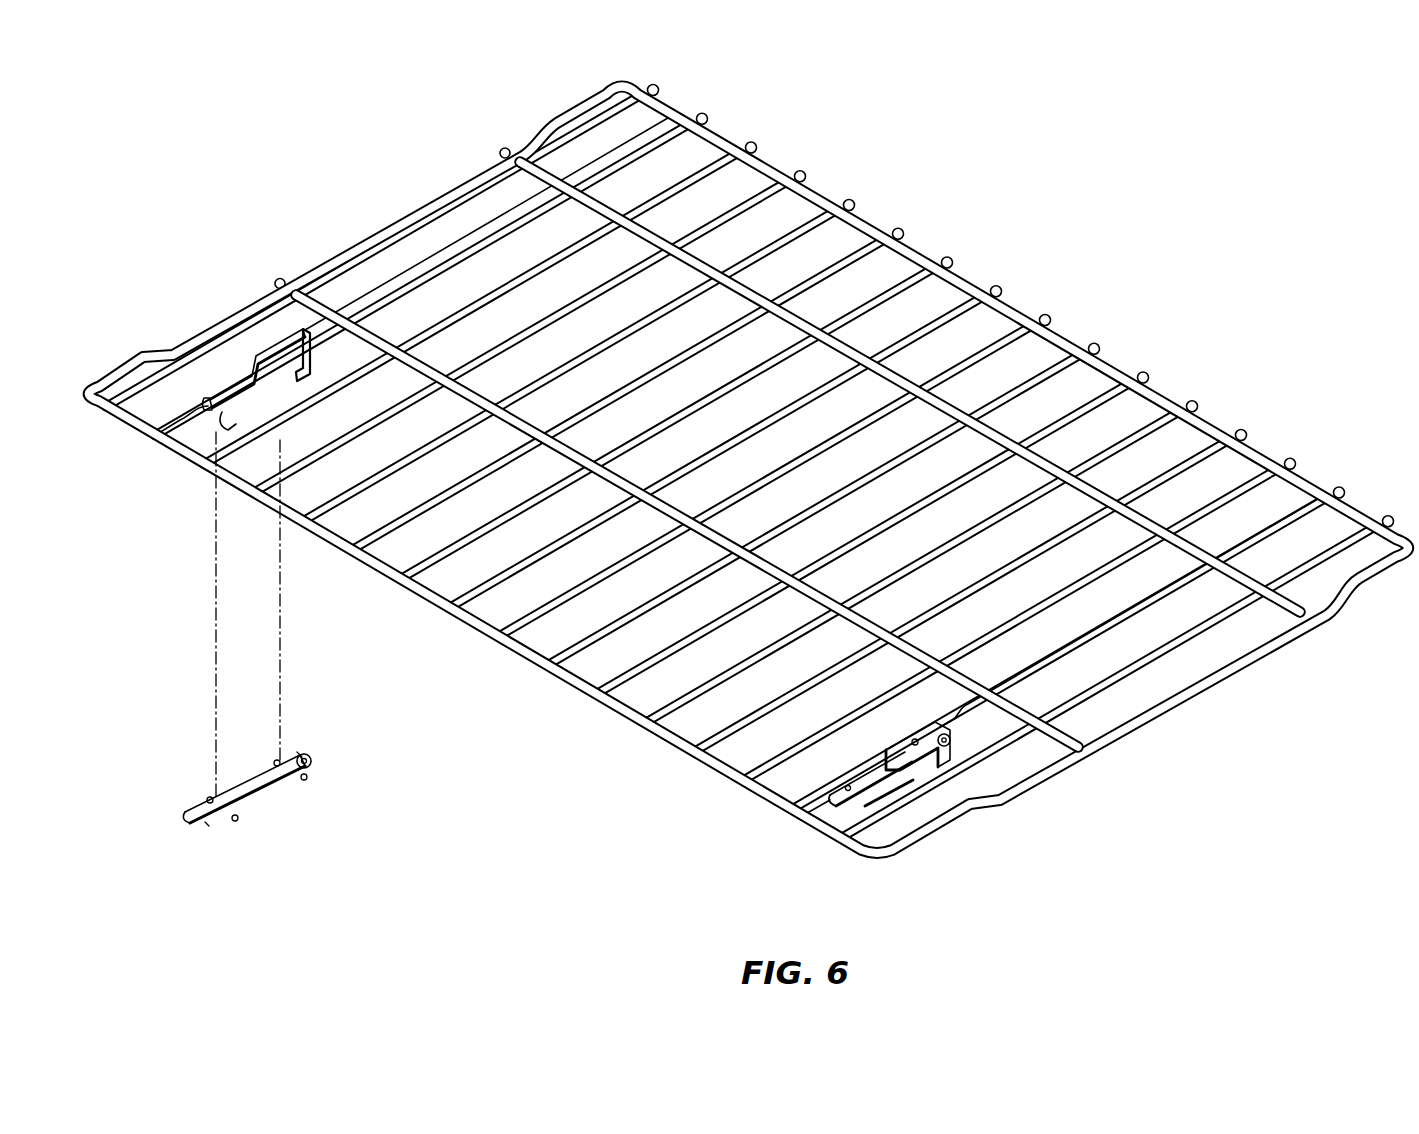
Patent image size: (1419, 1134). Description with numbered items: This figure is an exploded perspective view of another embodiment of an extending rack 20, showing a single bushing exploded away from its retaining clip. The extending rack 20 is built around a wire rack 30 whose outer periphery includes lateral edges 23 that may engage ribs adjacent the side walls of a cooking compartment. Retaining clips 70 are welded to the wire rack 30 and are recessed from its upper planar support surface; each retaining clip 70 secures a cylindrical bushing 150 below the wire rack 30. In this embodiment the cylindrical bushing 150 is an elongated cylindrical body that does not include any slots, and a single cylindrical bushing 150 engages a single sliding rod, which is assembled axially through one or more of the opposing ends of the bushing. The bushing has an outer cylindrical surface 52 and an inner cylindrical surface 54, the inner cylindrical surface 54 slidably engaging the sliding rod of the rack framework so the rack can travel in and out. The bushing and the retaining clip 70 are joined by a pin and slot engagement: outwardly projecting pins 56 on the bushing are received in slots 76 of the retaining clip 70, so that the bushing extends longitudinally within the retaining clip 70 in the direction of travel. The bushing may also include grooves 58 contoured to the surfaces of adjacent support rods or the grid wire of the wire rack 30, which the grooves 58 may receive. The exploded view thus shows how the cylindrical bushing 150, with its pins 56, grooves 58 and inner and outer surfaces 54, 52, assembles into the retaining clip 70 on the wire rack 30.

The extending rack 20 is at (749, 460).
The wire rack 30 is at (889, 172).
The lateral edges 23 is at (375, 233).
The retaining clip 70 is at (587, 520).
The slot 76 is at (260, 365).
The cylindrical bushing 150 is at (626, 671).
The outer cylindrical surface 52 is at (248, 790).
The inner cylindrical surface 54 is at (312, 760).
The outwardly projecting pins 56 is at (208, 798).
The grooves 58 is at (298, 755).